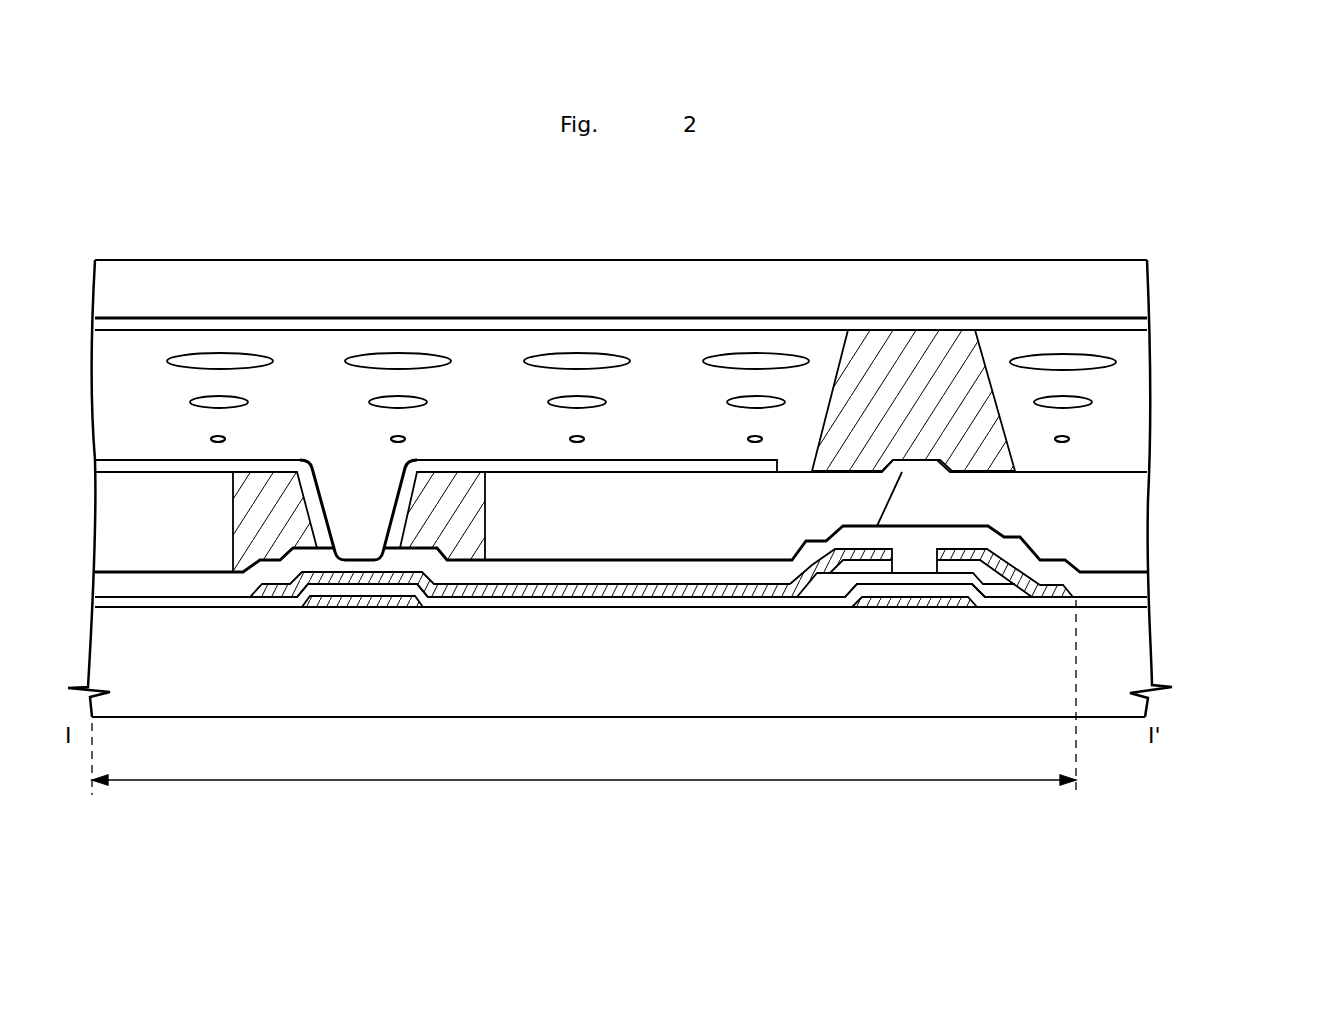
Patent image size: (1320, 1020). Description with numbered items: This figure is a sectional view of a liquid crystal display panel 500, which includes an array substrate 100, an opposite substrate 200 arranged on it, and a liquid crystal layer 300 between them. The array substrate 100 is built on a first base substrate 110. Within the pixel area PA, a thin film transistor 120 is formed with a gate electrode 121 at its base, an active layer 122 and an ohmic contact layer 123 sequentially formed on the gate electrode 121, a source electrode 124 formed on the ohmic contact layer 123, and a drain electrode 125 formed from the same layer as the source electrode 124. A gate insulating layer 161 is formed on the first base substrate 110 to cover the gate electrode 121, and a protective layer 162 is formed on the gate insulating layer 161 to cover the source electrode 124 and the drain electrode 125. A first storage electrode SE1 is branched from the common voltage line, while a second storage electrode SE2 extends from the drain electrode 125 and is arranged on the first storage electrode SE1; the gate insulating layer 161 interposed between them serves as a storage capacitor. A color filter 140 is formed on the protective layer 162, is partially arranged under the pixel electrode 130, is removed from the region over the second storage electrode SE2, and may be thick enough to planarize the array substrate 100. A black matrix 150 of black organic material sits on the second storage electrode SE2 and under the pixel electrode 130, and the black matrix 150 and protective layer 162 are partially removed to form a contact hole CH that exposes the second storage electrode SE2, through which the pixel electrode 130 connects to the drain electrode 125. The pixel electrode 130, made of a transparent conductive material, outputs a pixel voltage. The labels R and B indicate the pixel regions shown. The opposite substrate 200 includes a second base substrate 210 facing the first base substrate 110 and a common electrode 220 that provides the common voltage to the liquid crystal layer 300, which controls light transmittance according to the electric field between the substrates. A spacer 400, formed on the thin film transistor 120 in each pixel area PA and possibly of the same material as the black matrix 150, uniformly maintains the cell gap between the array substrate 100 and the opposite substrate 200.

The liquid crystal display panel 500 is at (1112, 184).
The spacer 400 is at (912, 340).
The opposite substrate 200 is at (706, 300).
The second base substrate 210 is at (1130, 282).
The common electrode 220 is at (1130, 322).
The liquid crystal layer 300 is at (1130, 397).
The pixel electrode 130 is at (553, 463).
The color filter 140 is at (657, 538).
The black matrix 150 is at (468, 540).
The contact hole CH is at (360, 519).
The array substrate 100 is at (705, 621).
The first base substrate 110 is at (1130, 631).
The gate insulating layer 161 is at (1130, 600).
The protective layer 162 is at (1130, 578).
The first storage electrode SE1 is at (363, 606).
The second storage electrode SE2 is at (270, 603).
The thin film transistor 120 is at (924, 630).
The gate electrode 121 is at (920, 602).
The active layer 122 is at (830, 585).
The ohmic contact layer 123 is at (980, 568).
The source electrode 124 is at (1030, 578).
The drain electrode 125 is at (835, 609).
The red pixel region R is at (692, 515).
The blue pixel region B is at (1097, 515).
The pixel area PA is at (584, 697).